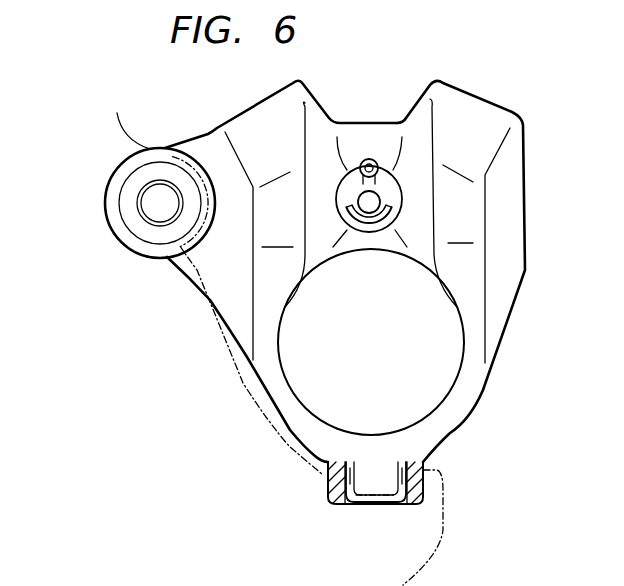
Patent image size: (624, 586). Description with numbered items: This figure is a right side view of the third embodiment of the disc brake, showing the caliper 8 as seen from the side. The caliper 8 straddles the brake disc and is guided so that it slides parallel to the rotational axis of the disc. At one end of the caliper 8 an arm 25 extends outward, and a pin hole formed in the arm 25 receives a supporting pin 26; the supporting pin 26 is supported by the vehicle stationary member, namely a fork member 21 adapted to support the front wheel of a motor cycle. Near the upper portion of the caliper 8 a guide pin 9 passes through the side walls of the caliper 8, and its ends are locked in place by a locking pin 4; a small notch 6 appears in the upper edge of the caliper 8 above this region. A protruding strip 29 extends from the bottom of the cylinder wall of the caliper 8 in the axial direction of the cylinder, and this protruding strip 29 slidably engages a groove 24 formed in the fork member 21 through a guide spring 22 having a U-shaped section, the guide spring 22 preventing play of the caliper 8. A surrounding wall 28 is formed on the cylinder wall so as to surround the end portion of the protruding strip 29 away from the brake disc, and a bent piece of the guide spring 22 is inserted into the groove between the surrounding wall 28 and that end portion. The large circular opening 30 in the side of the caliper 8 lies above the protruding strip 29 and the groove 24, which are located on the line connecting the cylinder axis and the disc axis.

The locking pin 4 is at (372, 159).
The notch 6 is at (349, 133).
The caliper 8 is at (503, 99).
The guide pin 9 is at (370, 206).
The fork member 21 is at (432, 520).
The guide spring 22 is at (384, 503).
The groove 24 is at (368, 487).
The arm 25 is at (118, 228).
The supporting pin 26 is at (146, 198).
The surrounding wall 28 is at (330, 493).
The protruding strip 29 is at (360, 484).
The large bore 30 is at (463, 346).